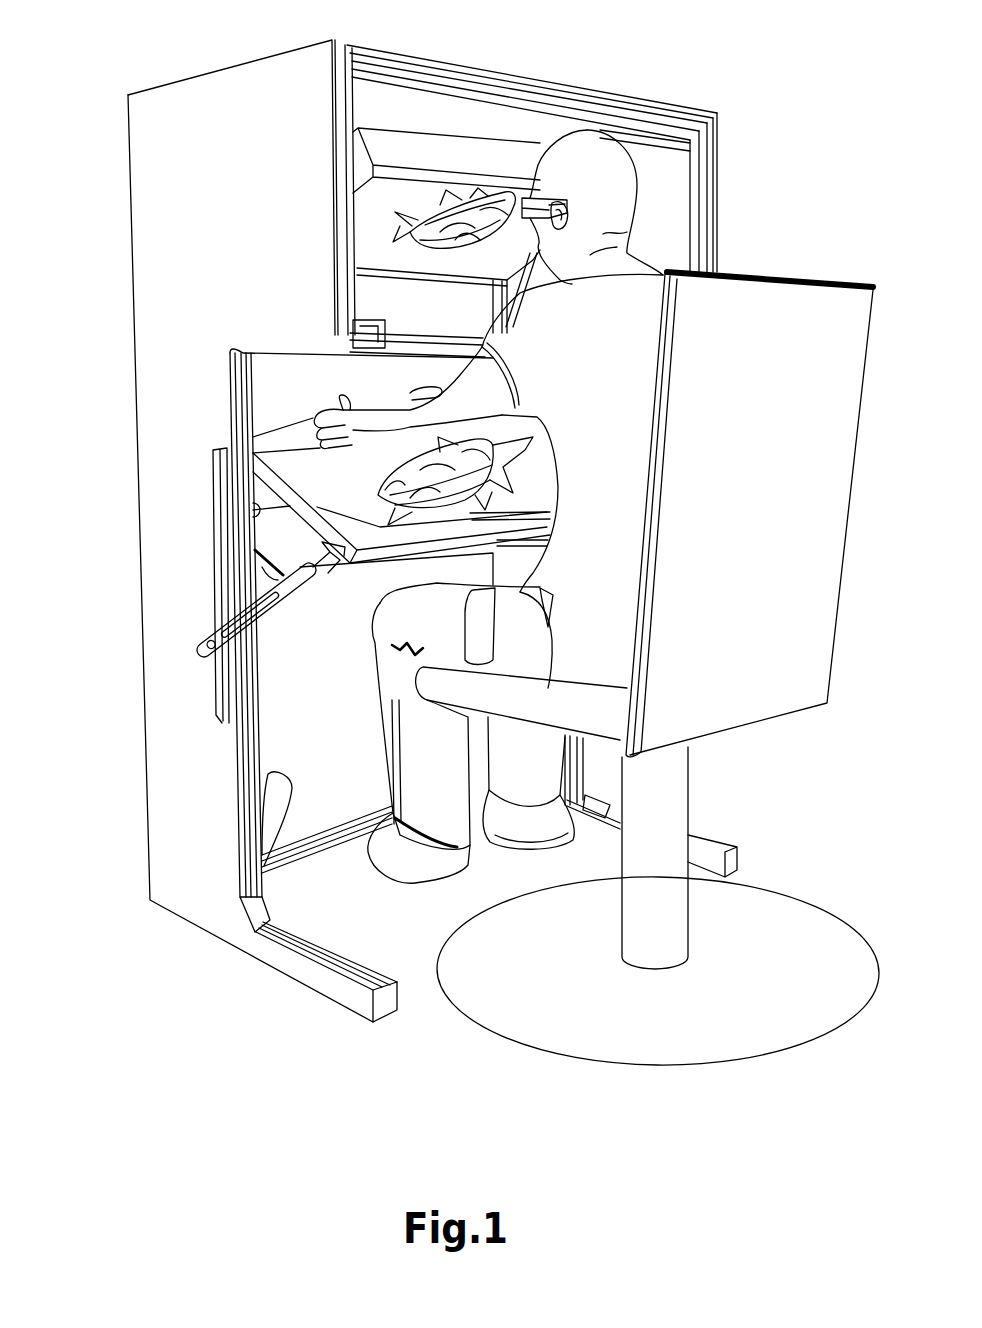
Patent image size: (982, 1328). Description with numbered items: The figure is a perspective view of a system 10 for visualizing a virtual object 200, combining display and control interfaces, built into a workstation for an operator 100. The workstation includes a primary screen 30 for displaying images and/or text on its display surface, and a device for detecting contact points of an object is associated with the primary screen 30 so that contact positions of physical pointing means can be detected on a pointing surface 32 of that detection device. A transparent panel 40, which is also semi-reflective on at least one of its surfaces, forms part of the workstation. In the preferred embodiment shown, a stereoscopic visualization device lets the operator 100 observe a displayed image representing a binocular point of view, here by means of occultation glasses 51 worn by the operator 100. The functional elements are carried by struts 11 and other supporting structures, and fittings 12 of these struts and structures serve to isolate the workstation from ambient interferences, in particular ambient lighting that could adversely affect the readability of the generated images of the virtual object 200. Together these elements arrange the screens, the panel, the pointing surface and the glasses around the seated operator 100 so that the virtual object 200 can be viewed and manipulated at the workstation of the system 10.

The system 10 is at (241, 1022).
The struts 11 is at (263, 853).
The fittings 12 is at (172, 237).
The primary screen 30 is at (304, 504).
The pointing surface 32 is at (298, 447).
The transparent panel 40 is at (422, 325).
The occultation glasses 51 is at (570, 133).
The operator 100 is at (627, 512).
The virtual object 200 is at (453, 190).